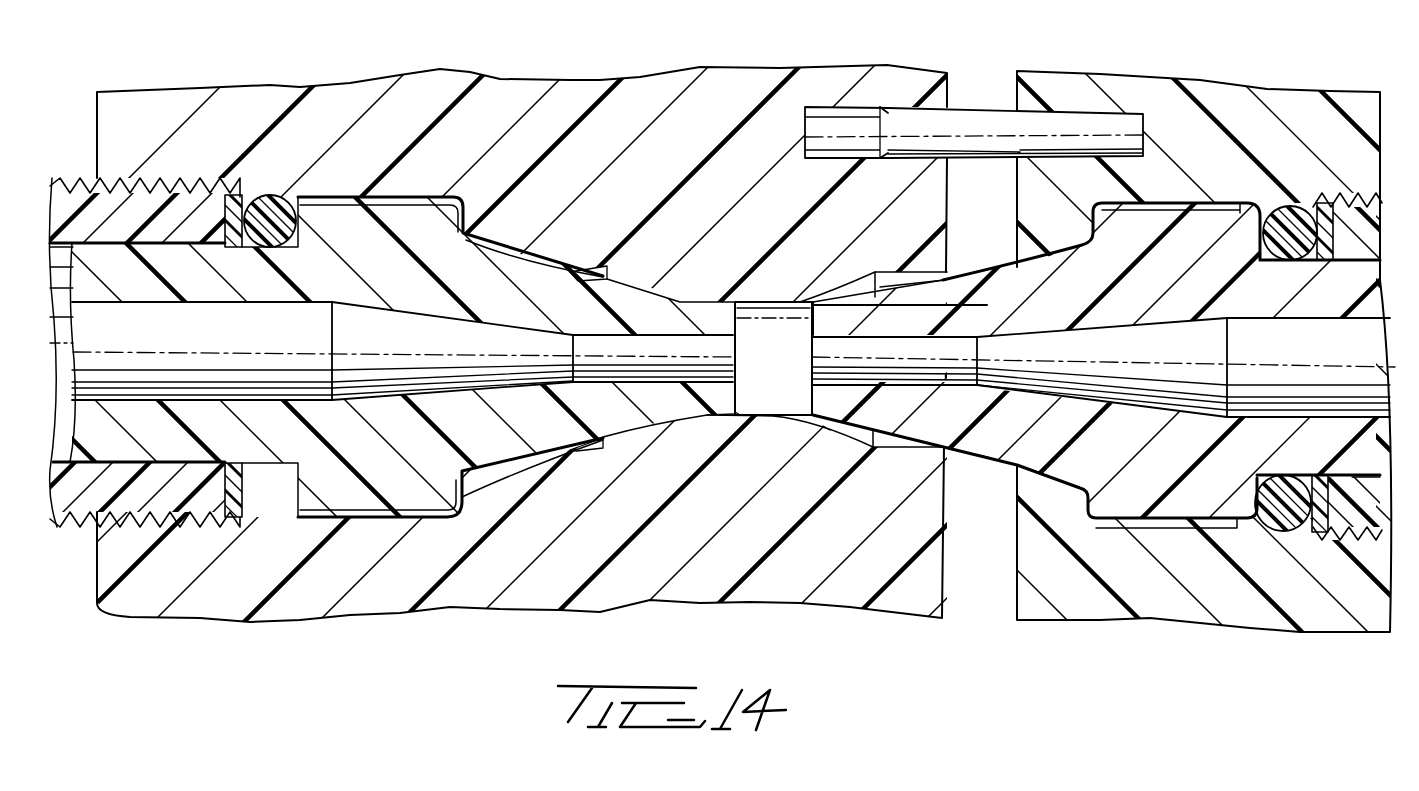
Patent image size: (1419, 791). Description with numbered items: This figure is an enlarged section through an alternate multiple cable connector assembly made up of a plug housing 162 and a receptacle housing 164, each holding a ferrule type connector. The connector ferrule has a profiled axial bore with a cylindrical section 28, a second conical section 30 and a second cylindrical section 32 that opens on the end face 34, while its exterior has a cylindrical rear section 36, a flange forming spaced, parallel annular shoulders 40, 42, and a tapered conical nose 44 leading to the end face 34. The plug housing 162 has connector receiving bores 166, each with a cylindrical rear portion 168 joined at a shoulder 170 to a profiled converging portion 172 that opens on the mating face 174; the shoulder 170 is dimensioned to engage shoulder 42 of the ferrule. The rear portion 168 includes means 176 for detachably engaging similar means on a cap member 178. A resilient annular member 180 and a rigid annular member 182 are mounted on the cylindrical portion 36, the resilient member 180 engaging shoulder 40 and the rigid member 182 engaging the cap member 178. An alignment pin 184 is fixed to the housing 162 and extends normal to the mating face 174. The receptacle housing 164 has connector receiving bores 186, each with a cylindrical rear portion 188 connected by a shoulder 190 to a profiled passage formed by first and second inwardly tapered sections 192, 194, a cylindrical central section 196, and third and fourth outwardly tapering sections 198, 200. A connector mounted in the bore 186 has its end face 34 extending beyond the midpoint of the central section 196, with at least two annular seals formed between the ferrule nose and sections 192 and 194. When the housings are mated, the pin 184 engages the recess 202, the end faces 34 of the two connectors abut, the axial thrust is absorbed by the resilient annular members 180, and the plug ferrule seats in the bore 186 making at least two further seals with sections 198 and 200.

The cylindrical section 28 is at (262, 310).
The second conical section 30 is at (438, 325).
The second cylindrical section 32 is at (668, 340).
The end face 34 is at (738, 326).
The cylindrical rear section 36 is at (1354, 478).
The annular shoulder 40 is at (1256, 486).
The annular shoulder 42 is at (1093, 503).
The conical nose 44 is at (983, 455).
The plug housing 162 is at (1190, 608).
The receptacle housing 164 is at (636, 85).
The connector receiving bore 166 is at (1017, 262).
The cylindrical rear portion 168 is at (1168, 528).
The shoulder 170 is at (1082, 525).
The profiled converging portion 172 is at (1057, 482).
The mating face 174 is at (1017, 580).
The detachable engaging means 176 is at (1350, 187).
The cap member 178 is at (1340, 542).
The resilient annular member 180 is at (1282, 484).
The rigid annular member 182 is at (1320, 530).
The alignment pin 184 is at (982, 114).
The connector receiving bore 186 is at (940, 280).
The cylindrical rear portion 188 is at (290, 525).
The shoulder 190 is at (478, 482).
The first inwardly tapered section 192 is at (523, 462).
The second inwardly tapered section 194 is at (658, 422).
The cylindrical central section 196 is at (735, 416).
The third outwardly tapering section 198 is at (855, 433).
The fourth outwardly tapering section 200 is at (905, 452).
The recess 202 is at (848, 108).